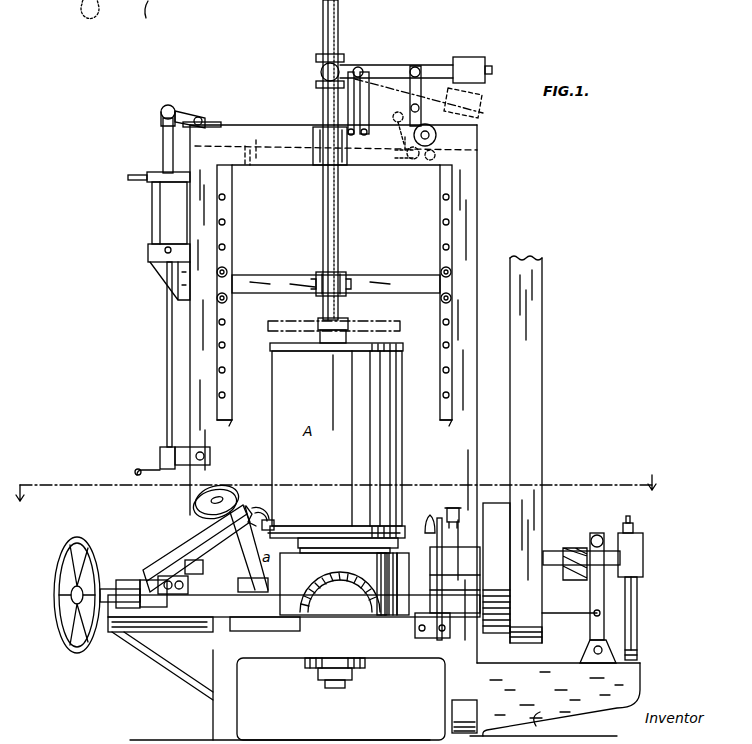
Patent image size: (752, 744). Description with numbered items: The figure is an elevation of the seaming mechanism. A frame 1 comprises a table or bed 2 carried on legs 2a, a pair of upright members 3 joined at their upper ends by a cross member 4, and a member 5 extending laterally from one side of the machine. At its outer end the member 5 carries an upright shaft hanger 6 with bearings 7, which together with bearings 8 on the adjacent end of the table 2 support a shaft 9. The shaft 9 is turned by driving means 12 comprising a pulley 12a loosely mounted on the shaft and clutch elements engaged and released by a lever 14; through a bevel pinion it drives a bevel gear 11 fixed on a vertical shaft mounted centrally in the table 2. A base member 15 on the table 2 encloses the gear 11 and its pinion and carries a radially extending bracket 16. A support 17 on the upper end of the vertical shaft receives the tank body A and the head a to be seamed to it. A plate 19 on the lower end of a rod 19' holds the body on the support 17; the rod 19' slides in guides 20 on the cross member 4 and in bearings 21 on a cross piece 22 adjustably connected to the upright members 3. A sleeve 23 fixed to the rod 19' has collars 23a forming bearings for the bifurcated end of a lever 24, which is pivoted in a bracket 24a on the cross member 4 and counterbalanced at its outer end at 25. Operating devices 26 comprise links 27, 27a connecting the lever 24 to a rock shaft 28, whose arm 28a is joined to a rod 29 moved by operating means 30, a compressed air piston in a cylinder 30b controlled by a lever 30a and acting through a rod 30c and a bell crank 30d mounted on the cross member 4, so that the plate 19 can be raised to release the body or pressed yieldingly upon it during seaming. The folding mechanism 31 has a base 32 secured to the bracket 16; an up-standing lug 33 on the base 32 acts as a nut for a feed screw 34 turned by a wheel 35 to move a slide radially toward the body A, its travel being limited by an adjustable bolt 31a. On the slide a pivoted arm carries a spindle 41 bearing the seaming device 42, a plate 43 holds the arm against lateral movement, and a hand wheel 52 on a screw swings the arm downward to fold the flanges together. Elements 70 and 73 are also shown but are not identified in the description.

The frame 1 is at (472, 164).
The table or bed 2 is at (266, 668).
The legs 2a is at (232, 702).
The upright members 3 is at (226, 438).
The cross member 4 is at (360, 165).
The extension member 5 is at (544, 721).
The upright shaft hanger 6 is at (642, 625).
The bearings 7 is at (644, 550).
The bearings 8 is at (447, 574).
The shaft 9 is at (578, 551).
The gear 11 is at (332, 602).
The driving means 12 is at (540, 449).
The pulley 12a is at (544, 627).
The lever 14 is at (637, 605).
The base member 15 is at (344, 581).
The bracket 16 is at (160, 637).
The support 17 is at (306, 536).
The plate 19 is at (325, 326).
The rod 19' is at (350, 160).
The guides 20 is at (323, 162).
The bearings 21 is at (350, 279).
The cross piece 22 is at (398, 282).
The sleeve 23 is at (320, 73).
The collars 23a is at (339, 56).
The lever 24 is at (397, 73).
The bracket 24a is at (368, 120).
The counterbalance 25 is at (478, 61).
The operating devices 26 is at (419, 122).
The link 27 is at (421, 70).
The link 27a is at (460, 117).
The rock shaft 28 is at (437, 136).
The arm 28a is at (420, 165).
The rod 29 is at (246, 166).
The operating means 30 is at (159, 199).
The lever 30a is at (145, 470).
The cylinder 30b is at (153, 239).
The rod 30c is at (162, 144).
The bell crank 30d is at (184, 115).
The folding or bending mechanism 31 is at (254, 506).
The bolt 31a is at (161, 10).
The base 32 is at (294, 613).
The up-standing lug 33 is at (130, 579).
The feed screw 34 is at (110, 585).
The wheel 35 is at (90, 546).
The spindle 41 is at (205, 549).
The seaming device 42 is at (266, 514).
The plate 43 is at (250, 574).
The hand wheel 52 is at (200, 506).
The gear 70 is at (339, 682).
The gear bracket 73 is at (582, 583).